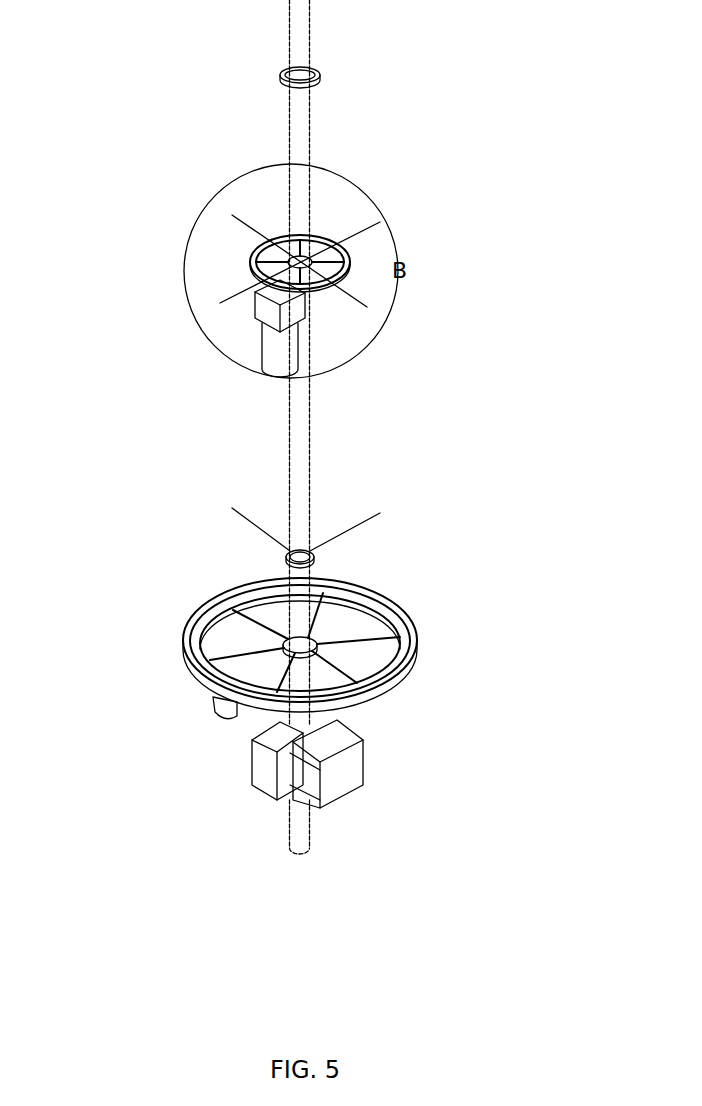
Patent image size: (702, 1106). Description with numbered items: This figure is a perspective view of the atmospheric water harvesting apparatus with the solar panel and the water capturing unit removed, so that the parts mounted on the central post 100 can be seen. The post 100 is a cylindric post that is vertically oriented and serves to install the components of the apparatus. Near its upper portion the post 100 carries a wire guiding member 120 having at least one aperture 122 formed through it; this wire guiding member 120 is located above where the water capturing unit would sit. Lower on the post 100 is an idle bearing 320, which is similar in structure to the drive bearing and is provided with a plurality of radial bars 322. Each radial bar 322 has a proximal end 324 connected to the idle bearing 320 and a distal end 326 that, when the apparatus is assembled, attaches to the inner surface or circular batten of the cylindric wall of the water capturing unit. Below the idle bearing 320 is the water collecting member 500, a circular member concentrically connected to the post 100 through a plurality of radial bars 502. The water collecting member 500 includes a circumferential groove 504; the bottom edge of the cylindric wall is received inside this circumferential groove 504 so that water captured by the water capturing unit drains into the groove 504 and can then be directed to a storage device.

The post 100 is at (290, 422).
The wire guiding member 120 is at (322, 78).
The aperture 122 is at (282, 72).
The idle bearing 320 is at (262, 556).
The radial bars 322 is at (242, 528).
The proximal end 324 is at (318, 555).
The distal end 326 is at (380, 513).
The water collecting member 500 is at (182, 653).
The radial bars 502 is at (362, 672).
The circumferential groove 504 is at (402, 636).